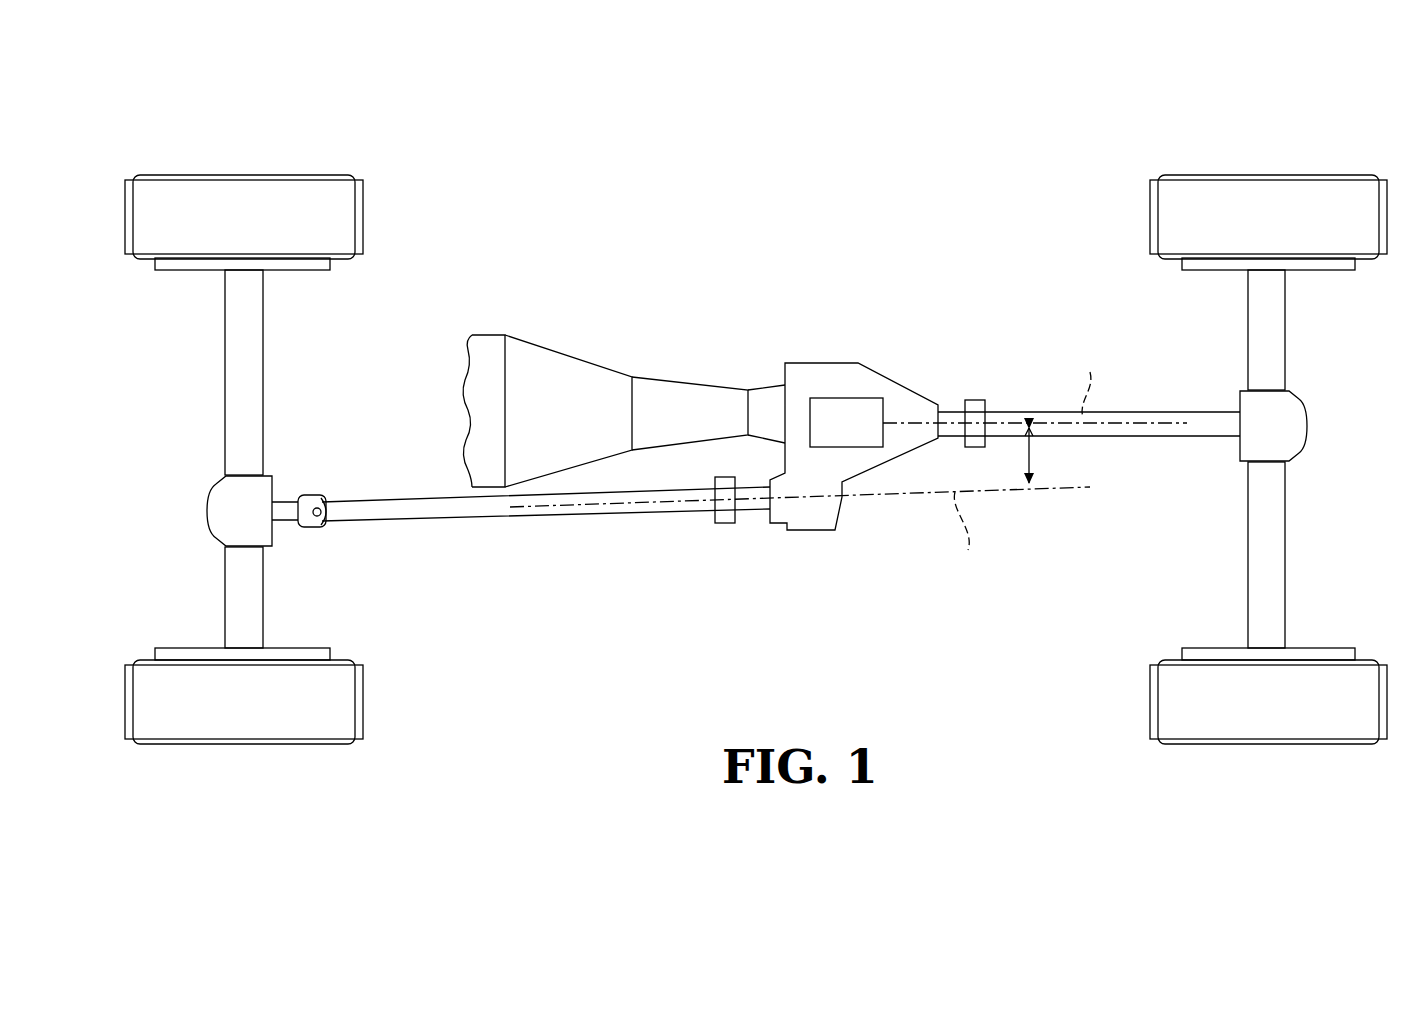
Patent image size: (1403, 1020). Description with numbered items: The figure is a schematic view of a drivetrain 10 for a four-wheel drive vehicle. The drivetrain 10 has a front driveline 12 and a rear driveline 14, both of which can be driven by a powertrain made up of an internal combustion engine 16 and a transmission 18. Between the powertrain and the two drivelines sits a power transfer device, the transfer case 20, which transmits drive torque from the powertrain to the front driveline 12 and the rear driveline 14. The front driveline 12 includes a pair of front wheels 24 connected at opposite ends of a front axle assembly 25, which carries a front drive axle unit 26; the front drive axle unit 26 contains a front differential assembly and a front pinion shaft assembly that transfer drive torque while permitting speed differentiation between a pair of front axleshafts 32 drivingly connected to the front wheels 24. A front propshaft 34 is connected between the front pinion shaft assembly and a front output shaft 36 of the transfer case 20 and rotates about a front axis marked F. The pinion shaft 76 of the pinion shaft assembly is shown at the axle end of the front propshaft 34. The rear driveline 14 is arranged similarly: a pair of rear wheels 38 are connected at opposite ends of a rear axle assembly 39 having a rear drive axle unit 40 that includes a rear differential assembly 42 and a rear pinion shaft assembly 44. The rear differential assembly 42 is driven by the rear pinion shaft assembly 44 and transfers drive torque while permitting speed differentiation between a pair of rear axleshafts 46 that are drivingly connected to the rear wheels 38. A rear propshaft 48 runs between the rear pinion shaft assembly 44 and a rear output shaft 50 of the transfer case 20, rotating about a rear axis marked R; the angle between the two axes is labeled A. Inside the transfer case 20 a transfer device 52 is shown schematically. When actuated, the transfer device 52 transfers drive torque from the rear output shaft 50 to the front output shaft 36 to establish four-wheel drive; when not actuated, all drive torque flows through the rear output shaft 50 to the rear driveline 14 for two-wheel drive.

The drivetrain 10 is at (924, 226).
The front driveline 12 is at (299, 451).
The rear driveline 14 is at (1168, 382).
The internal combustion engine 16 is at (485, 343).
The transmission 18 is at (690, 392).
The transfer case 20 is at (882, 367).
The front wheels 24 is at (309, 193).
The front axle assembly 25 is at (206, 385).
The front drive axle unit 26 is at (203, 503).
The front axleshafts 32 is at (264, 314).
The front propshaft 34 is at (388, 504).
The front output shaft 36 is at (745, 525).
The rear wheels 38 is at (1300, 192).
The rear axle assembly 39 is at (1302, 350).
The rear drive axle unit 40 is at (1312, 420).
The rear differential assembly 42 is at (1296, 440).
The rear pinion shaft assembly 44 is at (1231, 407).
The rear axleshafts 46 is at (1257, 310).
The rear propshaft 48 is at (1208, 428).
The rear output shaft 50 is at (950, 416).
The transfer device 52 is at (838, 410).
The pinion shaft 76 is at (287, 517).